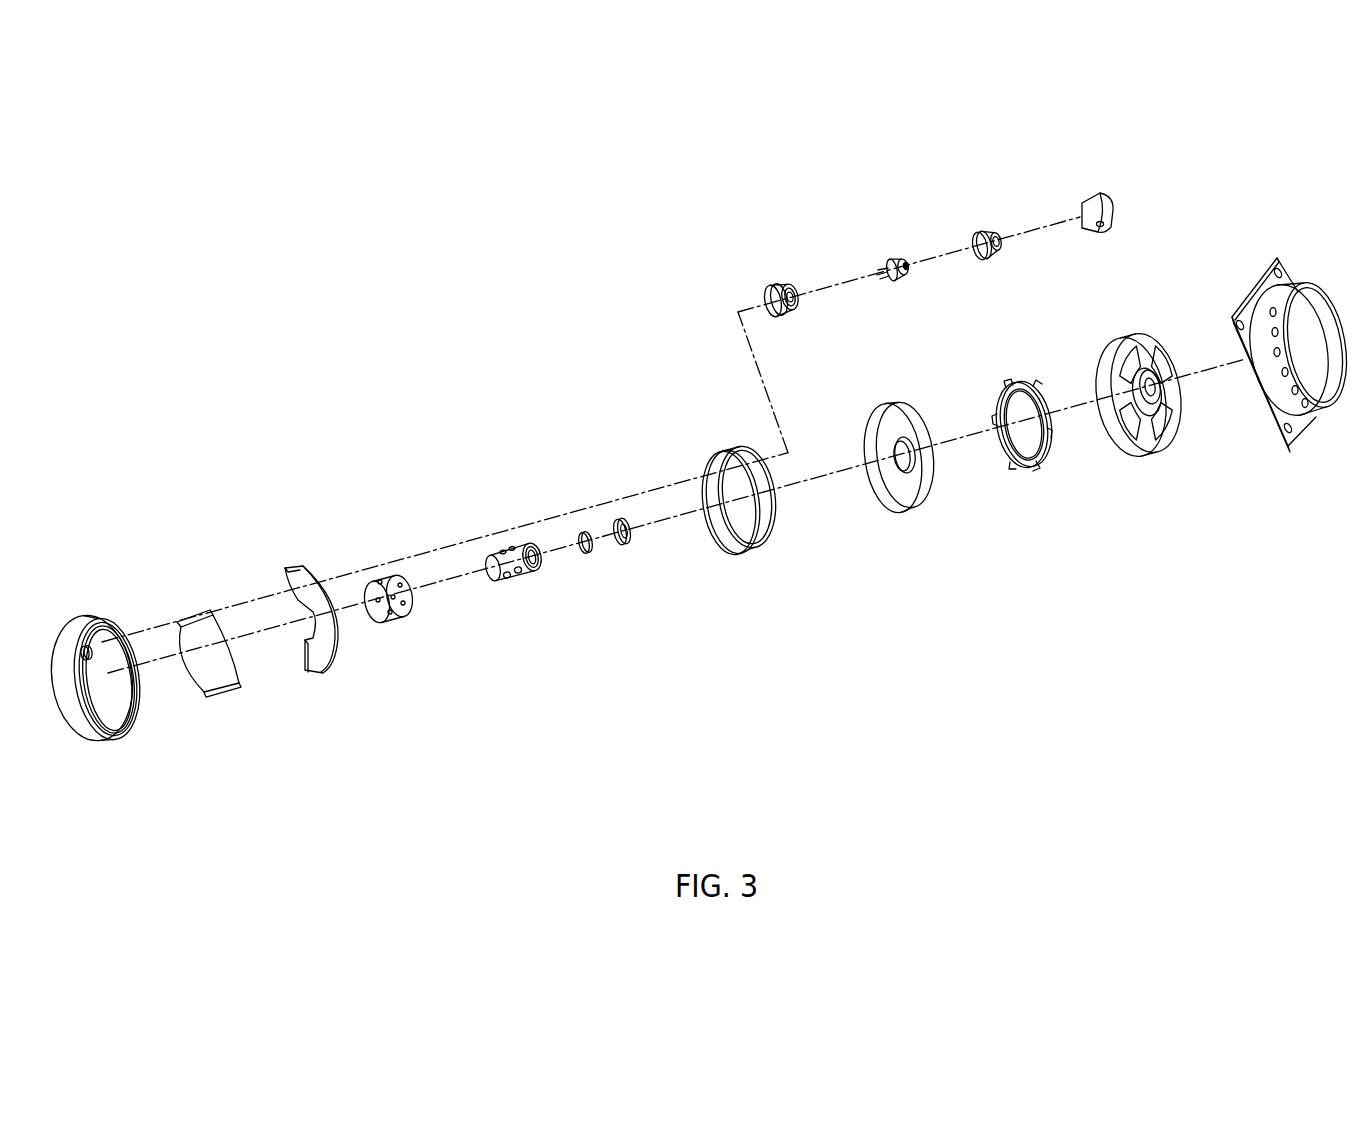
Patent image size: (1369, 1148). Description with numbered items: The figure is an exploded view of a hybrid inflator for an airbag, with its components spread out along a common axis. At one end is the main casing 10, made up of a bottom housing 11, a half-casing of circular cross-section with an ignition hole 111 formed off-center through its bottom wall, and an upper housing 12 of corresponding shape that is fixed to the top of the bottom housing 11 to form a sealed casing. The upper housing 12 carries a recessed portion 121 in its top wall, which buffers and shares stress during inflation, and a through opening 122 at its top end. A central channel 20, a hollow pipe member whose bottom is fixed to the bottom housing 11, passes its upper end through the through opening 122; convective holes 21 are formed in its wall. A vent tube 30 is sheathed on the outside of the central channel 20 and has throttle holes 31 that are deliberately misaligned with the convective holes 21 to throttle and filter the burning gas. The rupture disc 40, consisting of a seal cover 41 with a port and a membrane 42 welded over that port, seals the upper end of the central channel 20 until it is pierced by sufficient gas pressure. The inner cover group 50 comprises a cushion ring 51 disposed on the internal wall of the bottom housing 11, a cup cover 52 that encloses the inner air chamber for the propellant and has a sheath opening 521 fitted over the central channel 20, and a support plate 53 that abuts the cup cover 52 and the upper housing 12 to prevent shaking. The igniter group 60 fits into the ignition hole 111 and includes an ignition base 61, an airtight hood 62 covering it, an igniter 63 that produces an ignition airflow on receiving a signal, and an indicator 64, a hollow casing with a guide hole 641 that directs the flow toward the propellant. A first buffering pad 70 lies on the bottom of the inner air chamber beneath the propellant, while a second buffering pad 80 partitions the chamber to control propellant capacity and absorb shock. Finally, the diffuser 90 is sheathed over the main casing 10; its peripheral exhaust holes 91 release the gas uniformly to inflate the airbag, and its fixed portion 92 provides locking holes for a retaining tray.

The main casing 10 is at (102, 662).
The bottom housing 11 is at (63, 707).
The ignition hole 111 is at (90, 646).
The upper housing 12 is at (1158, 370).
The recessed portion 121 is at (1160, 398).
The through opening 122 is at (1160, 352).
The central channel 20 is at (526, 623).
The convective holes 21 is at (523, 575).
The vent tube 30 is at (383, 600).
The throttle holes 31 is at (382, 580).
The rupture disc 40 is at (619, 545).
The seal cover 41 is at (633, 543).
The membrane 42 is at (588, 555).
The inner cover group 50 is at (877, 479).
The cushion ring 51 is at (760, 547).
The cup cover 52 is at (903, 427).
The sheath opening 521 is at (912, 447).
The support plate 53 is at (1005, 380).
The igniter group 60 is at (935, 201).
The ignition base 61 is at (777, 287).
The airtight hood 62 is at (983, 232).
The igniter 63 is at (893, 262).
The indicator 64 is at (1108, 214).
The guide hole 641 is at (1099, 227).
The first buffering pad 70 is at (318, 676).
The second buffering pad 80 is at (217, 695).
The diffuser 90 is at (1293, 335).
The exhaust holes 91 is at (1273, 312).
The fixed portion 92 is at (1281, 270).